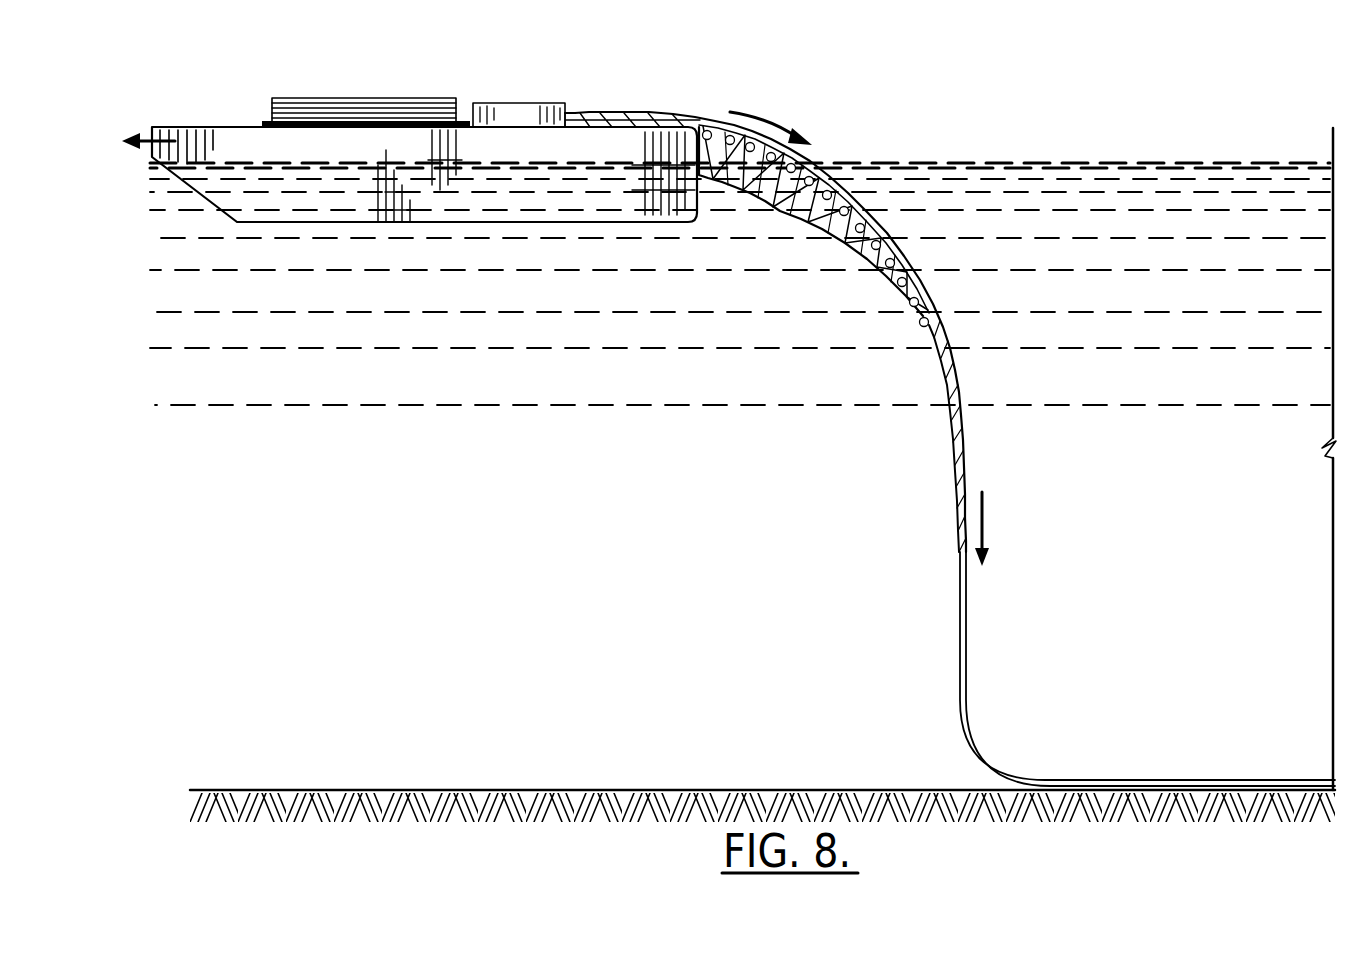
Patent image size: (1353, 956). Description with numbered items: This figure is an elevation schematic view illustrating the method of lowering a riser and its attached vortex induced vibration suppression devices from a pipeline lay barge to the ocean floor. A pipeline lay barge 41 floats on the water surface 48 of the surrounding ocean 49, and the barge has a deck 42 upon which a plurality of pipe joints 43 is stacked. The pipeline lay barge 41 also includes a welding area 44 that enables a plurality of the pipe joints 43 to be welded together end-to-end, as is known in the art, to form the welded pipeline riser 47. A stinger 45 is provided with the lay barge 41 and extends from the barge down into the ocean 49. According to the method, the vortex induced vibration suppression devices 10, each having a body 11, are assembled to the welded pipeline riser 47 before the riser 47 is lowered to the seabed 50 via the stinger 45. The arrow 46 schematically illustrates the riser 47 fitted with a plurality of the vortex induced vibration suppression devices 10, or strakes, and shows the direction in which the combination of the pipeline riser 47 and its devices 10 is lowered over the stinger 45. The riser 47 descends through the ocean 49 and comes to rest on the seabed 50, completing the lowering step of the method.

The vortex induced vibration suppression device 10 is at (876, 298).
The body 11 is at (960, 466).
The pipeline lay barge 41 is at (345, 200).
The deck 42 is at (226, 127).
The pipe joints 43 is at (400, 112).
The welding area 44 is at (512, 122).
The stinger 45 is at (815, 215).
The arrow 46 is at (770, 121).
The pipeline riser 47 is at (960, 677).
The water surface 48 is at (984, 156).
The ocean 49 is at (517, 450).
The seabed 50 is at (675, 790).